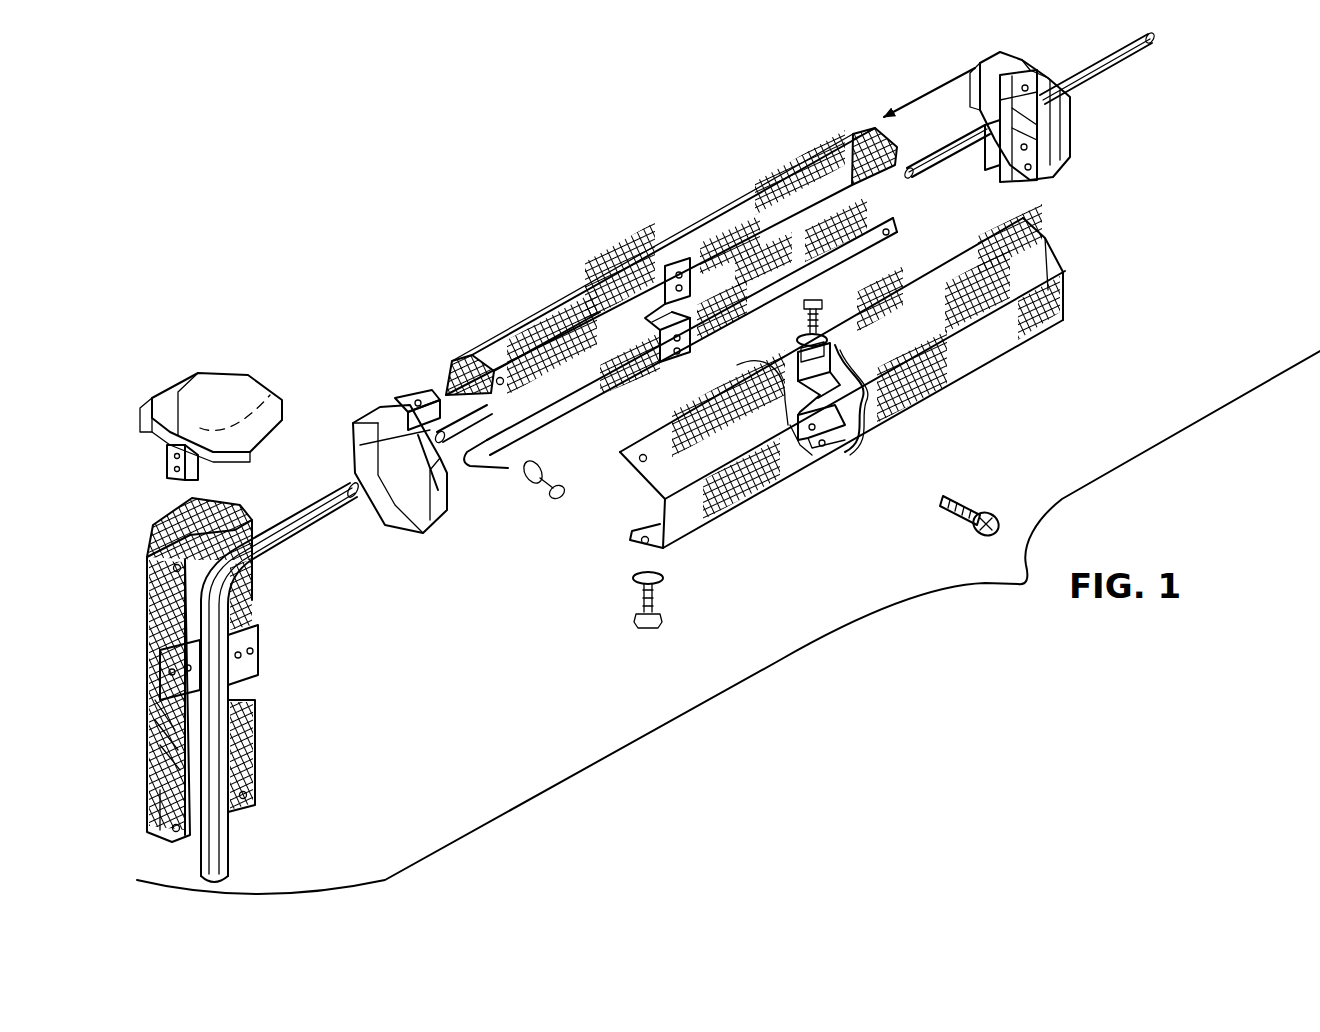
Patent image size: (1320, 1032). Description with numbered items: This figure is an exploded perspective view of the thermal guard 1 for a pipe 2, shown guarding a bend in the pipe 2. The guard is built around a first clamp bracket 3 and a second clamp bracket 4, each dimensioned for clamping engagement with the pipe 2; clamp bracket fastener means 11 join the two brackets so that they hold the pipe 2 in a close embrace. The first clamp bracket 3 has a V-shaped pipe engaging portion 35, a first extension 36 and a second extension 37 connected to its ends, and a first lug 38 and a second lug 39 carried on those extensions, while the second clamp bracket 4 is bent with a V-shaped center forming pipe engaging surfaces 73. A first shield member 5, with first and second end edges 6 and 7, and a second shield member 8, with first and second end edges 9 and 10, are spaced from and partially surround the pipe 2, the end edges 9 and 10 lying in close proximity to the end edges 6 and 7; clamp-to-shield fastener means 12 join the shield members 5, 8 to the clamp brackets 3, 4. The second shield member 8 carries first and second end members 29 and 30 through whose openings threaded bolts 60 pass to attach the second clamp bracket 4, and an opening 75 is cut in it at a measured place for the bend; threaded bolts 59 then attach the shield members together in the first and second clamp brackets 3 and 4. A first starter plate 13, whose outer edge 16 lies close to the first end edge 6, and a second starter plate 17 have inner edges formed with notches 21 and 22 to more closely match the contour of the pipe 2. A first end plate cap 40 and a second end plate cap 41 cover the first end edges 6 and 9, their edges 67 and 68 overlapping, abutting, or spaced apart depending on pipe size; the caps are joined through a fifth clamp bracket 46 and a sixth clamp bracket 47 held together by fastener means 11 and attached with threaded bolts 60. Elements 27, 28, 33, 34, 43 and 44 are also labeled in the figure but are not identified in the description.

The thermal guard 1 is at (740, 163).
The pipe 2 is at (1140, 55).
The first clamp bracket 3 is at (834, 455).
The second clamp bracket 4 is at (676, 264).
The first shield member 5 is at (1056, 332).
The first end edge 6 is at (1062, 300).
The second end edge 7 is at (660, 520).
The second shield member 8 is at (600, 280).
The first end edge 9 is at (878, 184).
The second end edge 10 is at (464, 370).
The clamp bracket fastener means 11 is at (1000, 516).
The clamp-to-shield fastener means 12 is at (802, 315).
The first starter plate 13 is at (1078, 135).
The outer edge 16 is at (1075, 118).
The second starter plate 17 is at (1018, 50).
The notch 21 is at (412, 490).
The notch 22 is at (373, 456).
The lower hole 27 is at (622, 556).
The upper hole 28 is at (630, 452).
The first end member 29 is at (585, 397).
The second end member 30 is at (567, 332).
The lower flange 33 is at (625, 538).
The top edge 34 is at (673, 426).
The pipe engaging portion 35 is at (746, 388).
The first extension 36 is at (797, 445).
The second extension 37 is at (829, 384).
The first lug 38 is at (812, 460).
The second lug 39 is at (858, 362).
The first end plate cap 40 is at (276, 397).
The second end plate cap 41 is at (198, 384).
The U-clip 43 is at (1006, 172).
The clip tab 44 is at (990, 163).
The fifth clamp bracket 46 is at (170, 481).
The sixth clamp bracket 47 is at (163, 452).
The threaded bolts 59 is at (968, 508).
The threaded bolts 60 is at (826, 308).
The edge 67 is at (176, 408).
The edge 68 is at (290, 420).
The pipe engaging surfaces 73 is at (688, 305).
The opening 75 is at (285, 540).